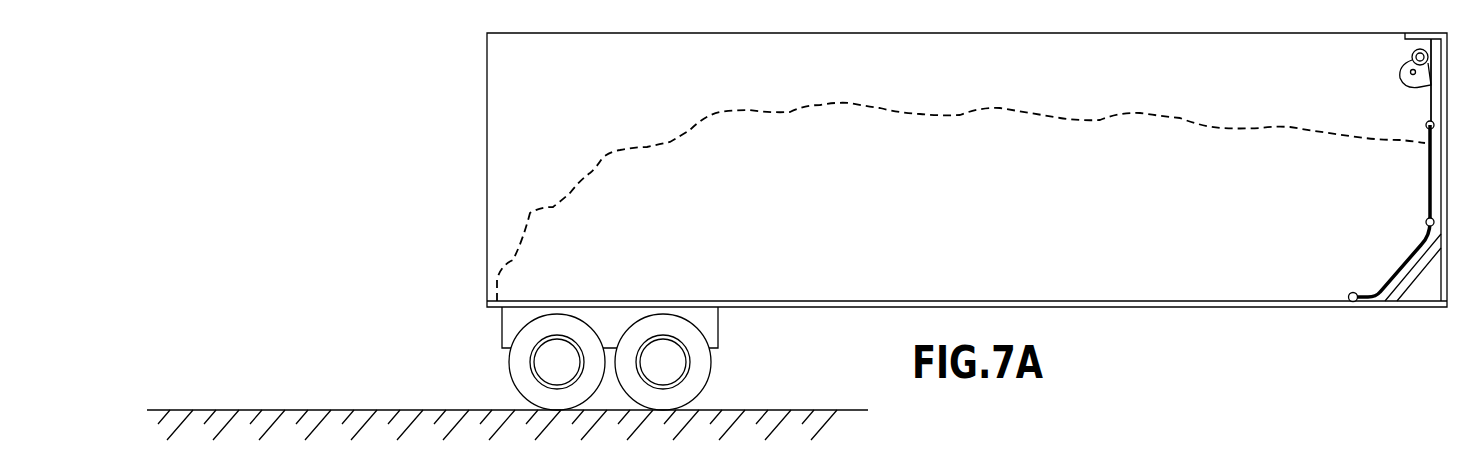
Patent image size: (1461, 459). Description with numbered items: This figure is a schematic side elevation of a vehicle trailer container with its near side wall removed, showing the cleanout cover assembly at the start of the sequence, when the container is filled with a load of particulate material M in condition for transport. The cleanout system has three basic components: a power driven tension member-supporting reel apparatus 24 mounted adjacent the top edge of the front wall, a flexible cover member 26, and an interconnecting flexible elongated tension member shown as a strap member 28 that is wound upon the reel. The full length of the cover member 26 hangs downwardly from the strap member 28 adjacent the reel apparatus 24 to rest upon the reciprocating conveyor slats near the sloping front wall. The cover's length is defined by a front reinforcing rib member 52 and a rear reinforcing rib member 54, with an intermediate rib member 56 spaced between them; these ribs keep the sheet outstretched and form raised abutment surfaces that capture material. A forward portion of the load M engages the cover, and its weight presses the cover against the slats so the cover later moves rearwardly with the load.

The load of particulate material M is at (1063, 118).
The power driven tension member-supporting reel apparatus 24 is at (1402, 76).
The cover member 26 is at (1410, 262).
The strap member 28 is at (1429, 104).
The front reinforcing rib member 52 is at (1426, 130).
The rear reinforcing rib member 54 is at (1348, 294).
The intermediate rib member 56 is at (1425, 222).